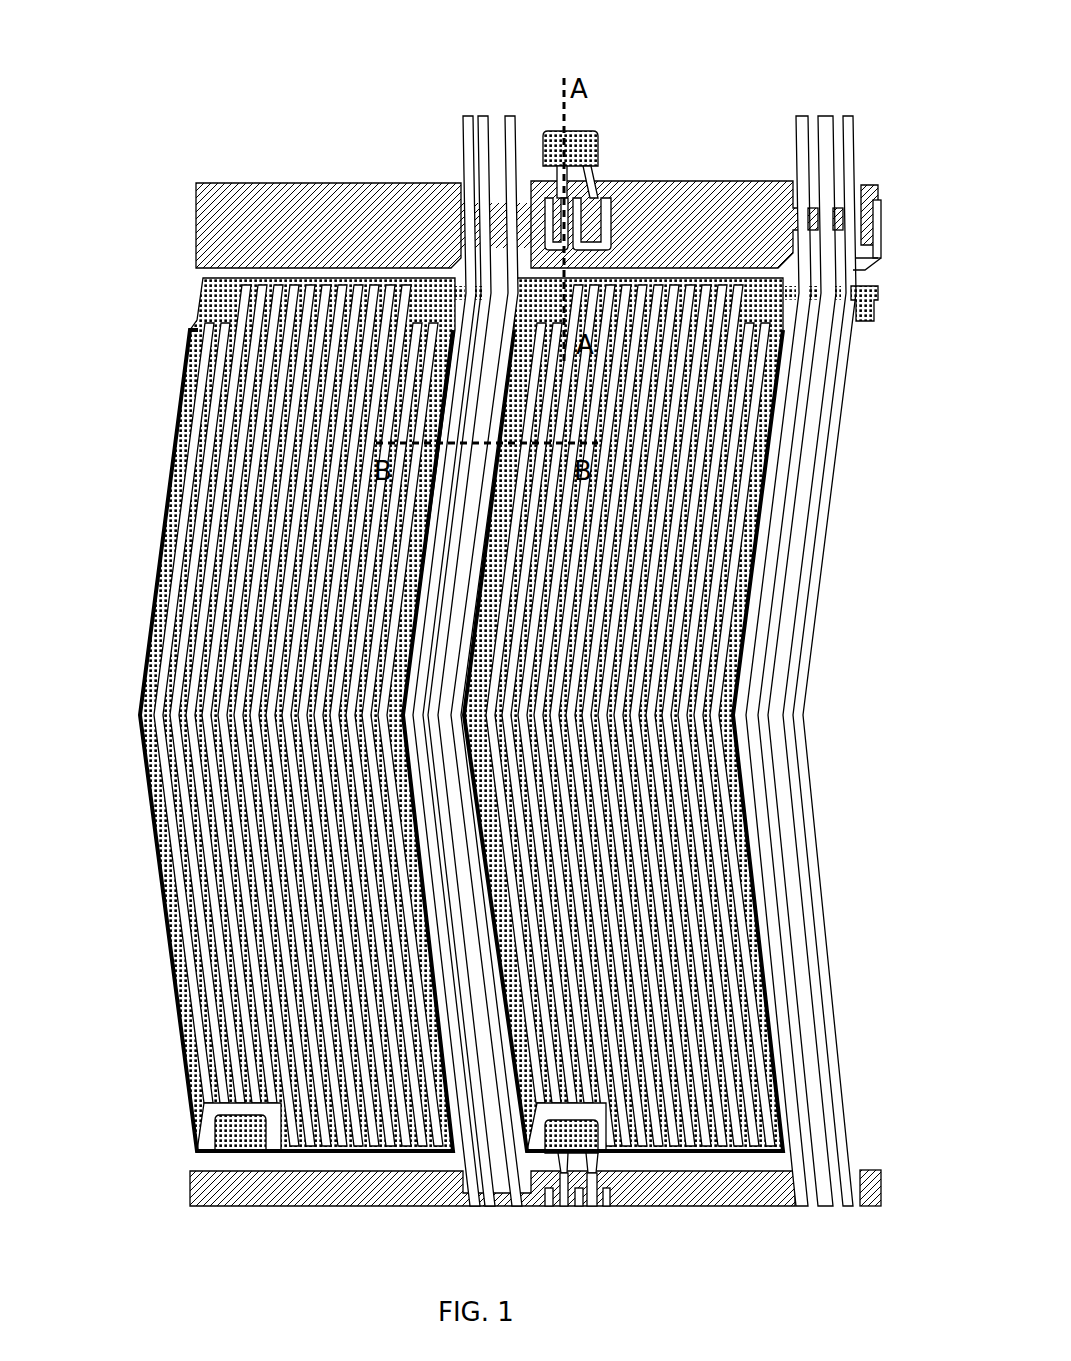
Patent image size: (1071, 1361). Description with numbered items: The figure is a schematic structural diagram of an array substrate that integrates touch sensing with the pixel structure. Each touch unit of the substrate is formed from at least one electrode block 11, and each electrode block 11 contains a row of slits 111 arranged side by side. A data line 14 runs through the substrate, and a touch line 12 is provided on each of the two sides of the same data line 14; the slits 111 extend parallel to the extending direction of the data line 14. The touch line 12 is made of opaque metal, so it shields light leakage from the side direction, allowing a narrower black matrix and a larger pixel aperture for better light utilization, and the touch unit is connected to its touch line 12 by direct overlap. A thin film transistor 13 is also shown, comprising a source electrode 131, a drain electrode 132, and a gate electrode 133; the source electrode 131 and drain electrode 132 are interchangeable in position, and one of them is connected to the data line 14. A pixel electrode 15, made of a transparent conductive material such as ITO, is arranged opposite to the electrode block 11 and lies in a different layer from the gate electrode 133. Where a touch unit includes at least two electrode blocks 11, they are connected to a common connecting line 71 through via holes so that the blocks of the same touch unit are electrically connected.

The electrode block 11 is at (215, 297).
The slits 111 is at (185, 450).
The touch line 12 is at (462, 120).
The thin film transistor 13 is at (659, 154).
The source electrode 131 is at (612, 196).
The drain electrode 132 is at (588, 182).
The gate electrode 133 is at (632, 92).
The data line 14 is at (480, 120).
The pixel electrode 15 is at (183, 372).
The connecting line 71 is at (870, 300).